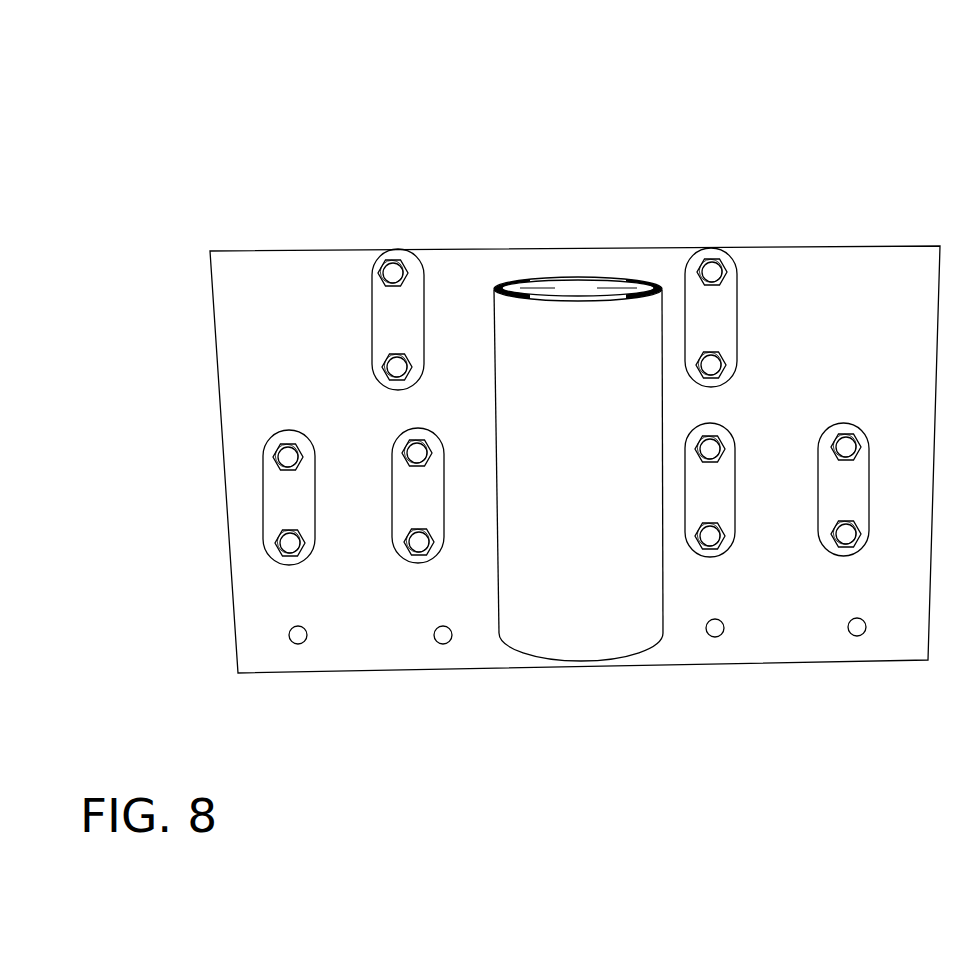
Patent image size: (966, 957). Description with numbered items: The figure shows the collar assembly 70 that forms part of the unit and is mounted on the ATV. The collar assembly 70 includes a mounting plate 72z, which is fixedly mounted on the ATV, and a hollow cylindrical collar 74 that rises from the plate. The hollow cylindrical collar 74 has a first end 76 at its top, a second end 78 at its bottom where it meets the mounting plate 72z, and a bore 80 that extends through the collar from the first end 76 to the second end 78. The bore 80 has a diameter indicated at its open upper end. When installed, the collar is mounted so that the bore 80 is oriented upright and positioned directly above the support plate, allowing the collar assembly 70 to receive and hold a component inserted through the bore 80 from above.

The collar assembly 70 is at (457, 698).
The mounting plate 72z is at (835, 262).
The hollow cylindrical collar 74 is at (531, 353).
The first end 76 is at (633, 277).
The second end 78 is at (584, 600).
The bore 80 is at (567, 338).